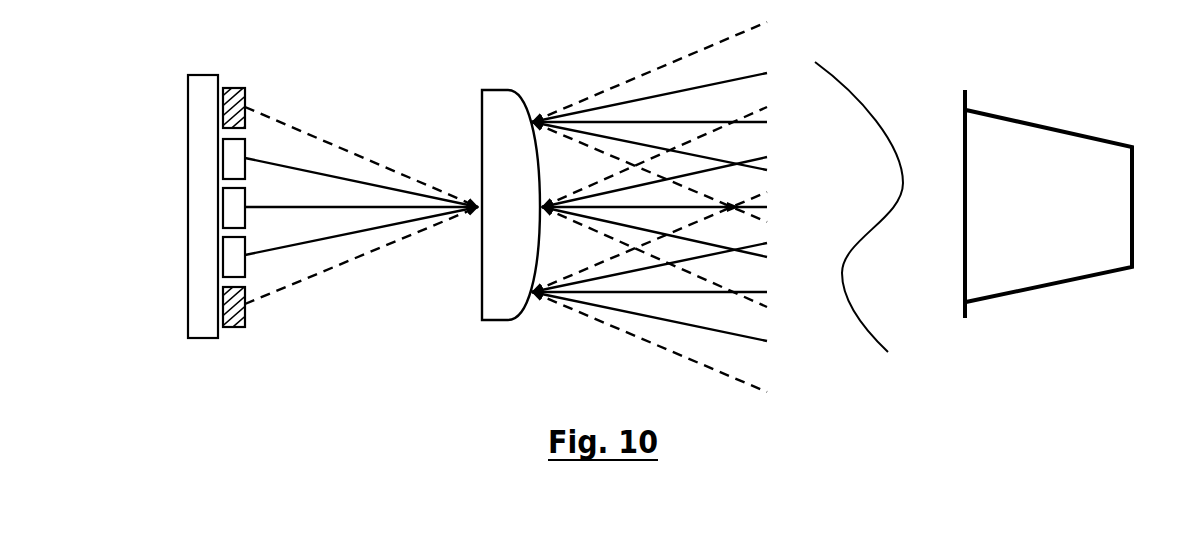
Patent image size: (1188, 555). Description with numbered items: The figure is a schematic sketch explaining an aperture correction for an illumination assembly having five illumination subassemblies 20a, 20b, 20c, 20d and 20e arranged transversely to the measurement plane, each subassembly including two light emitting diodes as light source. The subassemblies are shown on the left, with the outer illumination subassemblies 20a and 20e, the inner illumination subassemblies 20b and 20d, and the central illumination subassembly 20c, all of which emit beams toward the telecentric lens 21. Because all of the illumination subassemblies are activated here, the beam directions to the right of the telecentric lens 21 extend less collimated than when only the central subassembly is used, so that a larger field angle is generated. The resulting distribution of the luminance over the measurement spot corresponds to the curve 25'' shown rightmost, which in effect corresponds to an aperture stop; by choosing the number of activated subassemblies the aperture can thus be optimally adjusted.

The illumination subassembly 20a is at (222, 105).
The illumination subassembly 20b is at (222, 158).
The illumination subassembly 20c is at (235, 208).
The illumination subassembly 20d is at (230, 260).
The illumination subassembly 20e is at (222, 307).
The telecentric lens 21 is at (500, 132).
The curve 25'' is at (1048, 226).